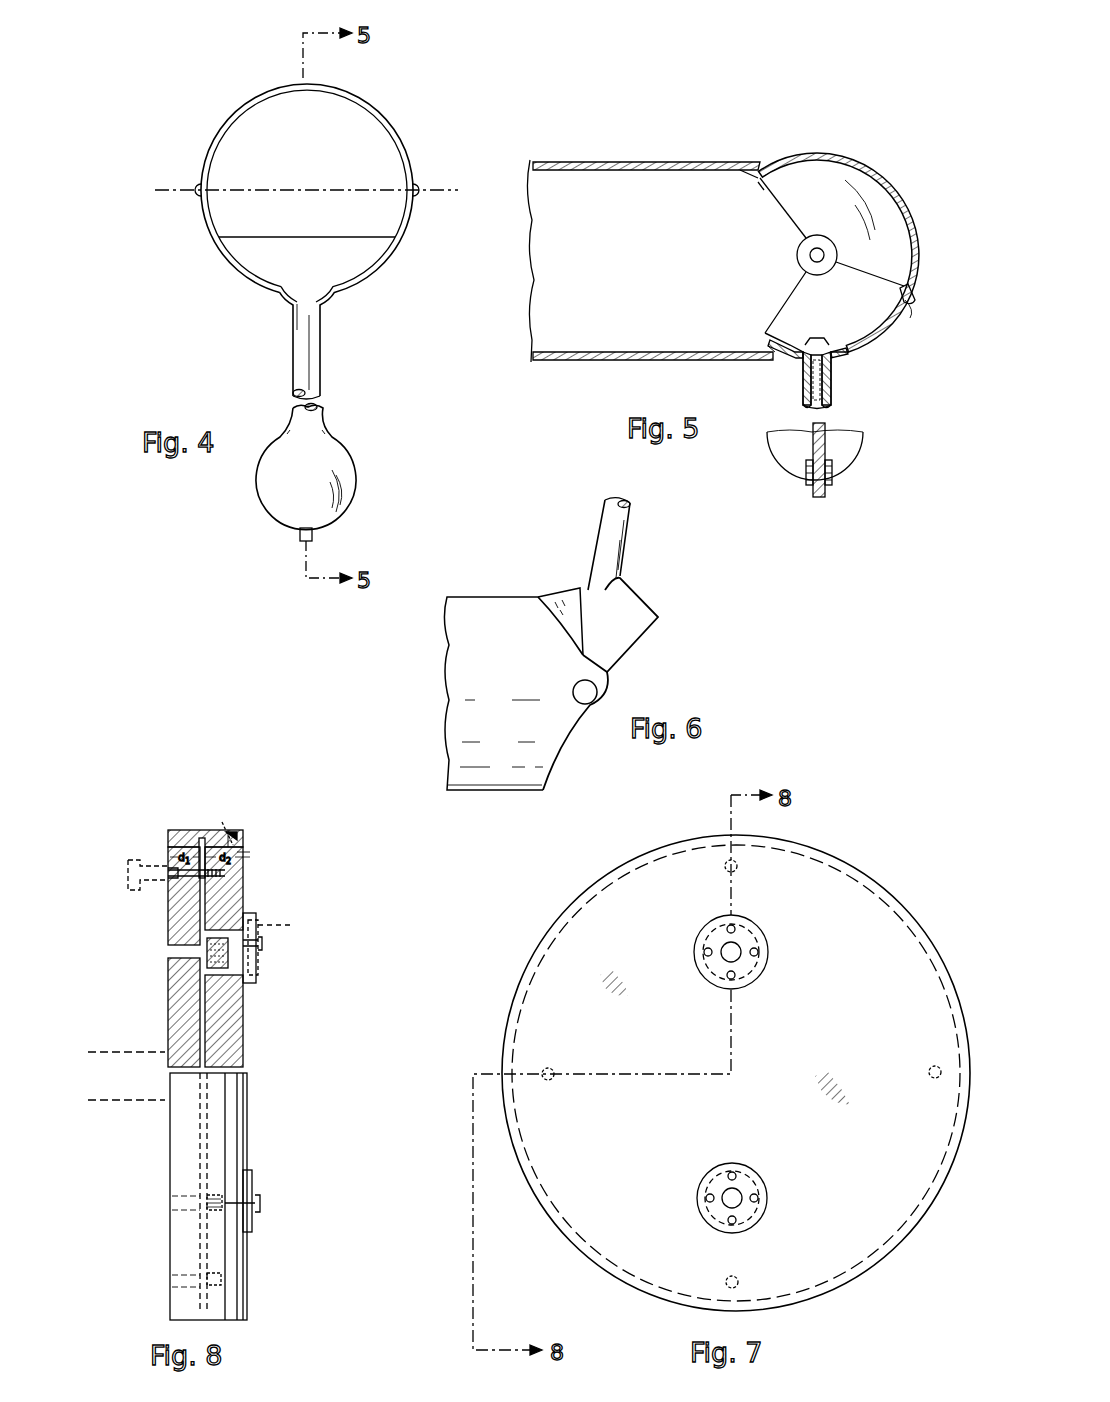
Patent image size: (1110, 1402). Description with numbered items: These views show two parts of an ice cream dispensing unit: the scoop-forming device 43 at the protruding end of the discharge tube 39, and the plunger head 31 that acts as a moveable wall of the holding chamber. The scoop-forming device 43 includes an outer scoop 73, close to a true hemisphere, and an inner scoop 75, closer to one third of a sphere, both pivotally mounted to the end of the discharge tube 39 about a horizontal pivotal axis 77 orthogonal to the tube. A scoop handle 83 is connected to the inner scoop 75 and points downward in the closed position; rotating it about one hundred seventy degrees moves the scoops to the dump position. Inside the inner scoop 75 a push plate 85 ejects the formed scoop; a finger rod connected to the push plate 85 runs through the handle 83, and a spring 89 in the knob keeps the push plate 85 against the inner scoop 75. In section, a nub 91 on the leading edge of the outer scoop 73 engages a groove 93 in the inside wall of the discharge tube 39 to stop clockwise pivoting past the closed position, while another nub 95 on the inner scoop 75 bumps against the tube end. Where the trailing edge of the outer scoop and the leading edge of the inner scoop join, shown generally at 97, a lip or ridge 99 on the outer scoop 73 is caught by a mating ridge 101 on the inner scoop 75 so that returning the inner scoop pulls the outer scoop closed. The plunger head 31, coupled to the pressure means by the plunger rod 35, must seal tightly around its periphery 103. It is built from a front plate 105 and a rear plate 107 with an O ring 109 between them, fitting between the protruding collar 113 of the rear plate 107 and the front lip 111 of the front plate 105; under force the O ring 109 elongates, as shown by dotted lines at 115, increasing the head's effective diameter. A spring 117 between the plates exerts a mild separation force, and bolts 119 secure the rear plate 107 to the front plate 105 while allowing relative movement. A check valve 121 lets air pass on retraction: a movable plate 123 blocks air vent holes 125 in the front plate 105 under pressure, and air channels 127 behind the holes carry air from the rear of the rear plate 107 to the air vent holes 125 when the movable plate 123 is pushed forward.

In FIG. 7, the plunger head 31 is at (920, 888).
In FIG. 8, the plunger head 31 is at (186, 800).
In FIG. 8, the plunger rod 35 is at (114, 1052).
In FIG. 5, the discharge tube 39 is at (705, 162).
In FIG. 6, the discharge tube 39 is at (490, 608).
In FIG. 4, the scoop-forming device 43 is at (315, 241).
In FIG. 5, the scoop-forming device 43 is at (856, 263).
In FIG. 6, the scoop-forming device 43 is at (623, 644).
In FIG. 4, the outer scoop 73 is at (375, 152).
In FIG. 5, the outer scoop 73 is at (875, 162).
In FIG. 6, the outer scoop 73 is at (558, 596).
In FIG. 4, the inner scoop 75 is at (355, 250).
In FIG. 5, the inner scoop 75 is at (778, 335).
In FIG. 6, the inner scoop 75 is at (618, 640).
In FIG. 4, the pivotal axis 77 is at (183, 190).
In FIG. 6, the scoop handle 83 is at (618, 560).
In FIG. 5, the push plate 85 is at (822, 340).
In FIG. 5, the spring 89 is at (832, 470).
In FIG. 5, the nub 91 is at (765, 170).
In FIG. 5, the slit or groove 93 is at (757, 180).
In FIG. 5, the nub 95 is at (780, 356).
In FIG. 5, the junction of scoop edges 97 is at (908, 310).
In FIG. 5, the lip or ridge 99 is at (914, 296).
In FIG. 5, the mating lip or ridge 101 is at (904, 278).
In FIG. 7, the periphery 103 is at (972, 1080).
In FIG. 8, the front plate 105 is at (240, 1032).
In FIG. 8, the rear plate 107 is at (182, 1022).
In FIG. 7, the O ring 109 is at (640, 1280).
In FIG. 8, the O ring 109 is at (236, 828).
In FIG. 8, the front lip 111 is at (240, 838).
In FIG. 8, the protruding collar 113 is at (190, 830).
In FIG. 8, the elongated O ring position 115 is at (228, 810).
In FIG. 8, the spring 117 is at (170, 912).
In FIG. 8, the bolts 119 is at (127, 884).
In FIG. 8, the check valve 121 is at (283, 962).
In FIG. 8, the movable plate 123 is at (252, 922).
In FIG. 8, the air vent holes 125 is at (246, 915).
In FIG. 8, the air channels 127 is at (228, 915).